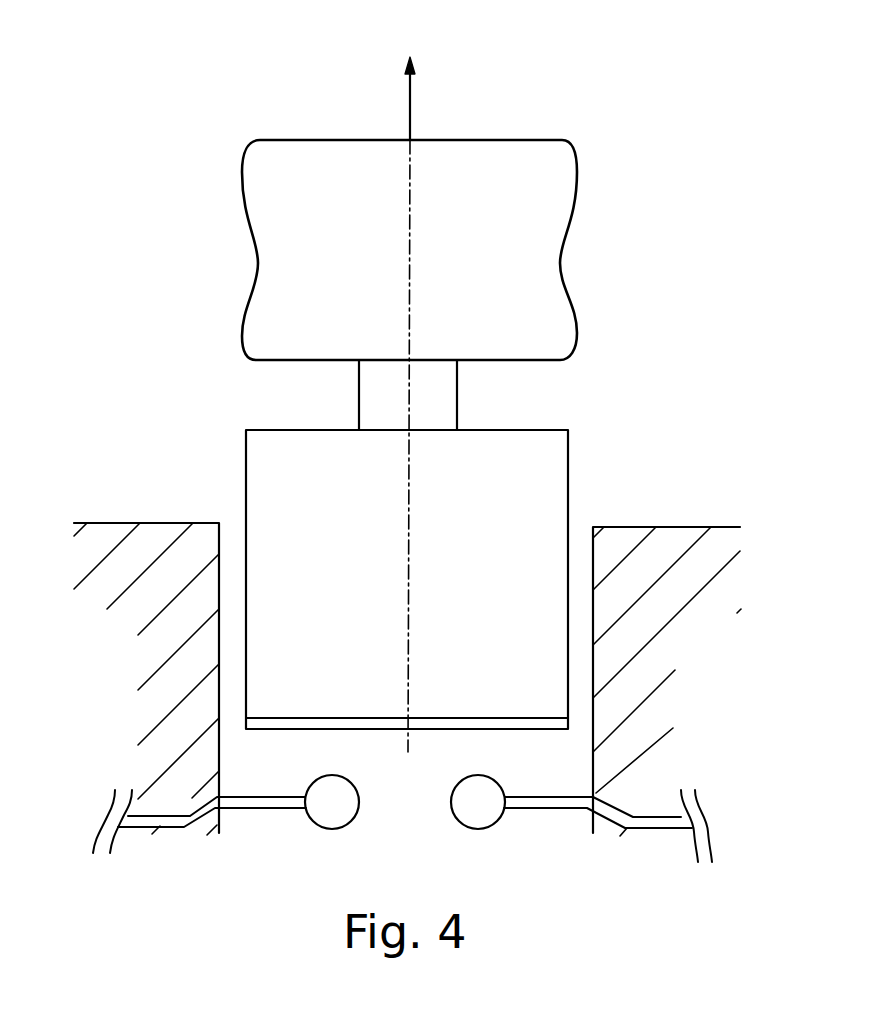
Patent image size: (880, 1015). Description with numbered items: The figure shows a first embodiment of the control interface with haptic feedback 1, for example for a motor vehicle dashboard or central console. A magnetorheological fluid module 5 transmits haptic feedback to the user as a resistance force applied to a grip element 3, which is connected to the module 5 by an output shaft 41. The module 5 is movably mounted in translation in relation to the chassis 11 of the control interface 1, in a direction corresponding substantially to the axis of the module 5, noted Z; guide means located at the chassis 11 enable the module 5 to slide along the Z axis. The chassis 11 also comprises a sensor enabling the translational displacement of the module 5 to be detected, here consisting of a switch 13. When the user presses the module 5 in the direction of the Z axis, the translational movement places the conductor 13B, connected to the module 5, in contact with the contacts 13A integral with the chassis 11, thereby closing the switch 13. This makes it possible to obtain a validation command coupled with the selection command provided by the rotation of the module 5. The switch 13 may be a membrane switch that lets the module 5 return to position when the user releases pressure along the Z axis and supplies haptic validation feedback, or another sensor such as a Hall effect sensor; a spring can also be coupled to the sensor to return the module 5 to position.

The control interface with haptic feedback 1 is at (243, 95).
The grip element 3 is at (545, 272).
The output shaft 41 is at (438, 400).
The magnetorheological fluid module 5 is at (545, 632).
The chassis 11 is at (684, 576).
The switch 13 is at (532, 772).
The contacts 13A is at (328, 815).
The conductor 13B is at (448, 722).
The Z axis Z is at (401, 733).